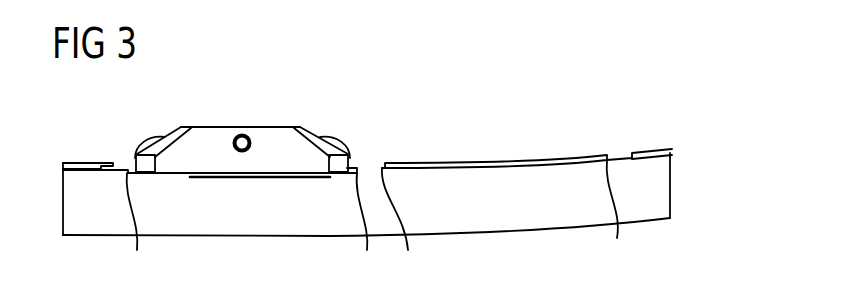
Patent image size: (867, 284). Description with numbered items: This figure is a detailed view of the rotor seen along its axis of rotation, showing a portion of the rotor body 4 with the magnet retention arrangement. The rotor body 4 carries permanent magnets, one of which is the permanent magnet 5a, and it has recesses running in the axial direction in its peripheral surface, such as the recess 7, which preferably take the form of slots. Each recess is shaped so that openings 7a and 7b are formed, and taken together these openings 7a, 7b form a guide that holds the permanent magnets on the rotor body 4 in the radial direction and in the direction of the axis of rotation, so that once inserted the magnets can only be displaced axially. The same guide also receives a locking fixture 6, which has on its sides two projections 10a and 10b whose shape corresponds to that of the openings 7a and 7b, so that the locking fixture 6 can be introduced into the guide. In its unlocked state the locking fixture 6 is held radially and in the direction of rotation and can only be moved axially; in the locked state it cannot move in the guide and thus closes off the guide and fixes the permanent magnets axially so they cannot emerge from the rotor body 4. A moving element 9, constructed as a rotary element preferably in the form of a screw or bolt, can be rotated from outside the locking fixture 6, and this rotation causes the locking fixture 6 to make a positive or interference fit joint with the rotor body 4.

The rotor body 4 is at (667, 190).
The permanent magnet 5a is at (336, 141).
The locking fixture 6 is at (270, 110).
The recess 7 is at (508, 161).
The opening 7a is at (402, 226).
The opening 7b is at (616, 218).
The moving element 9 is at (242, 134).
The projection 10a is at (136, 228).
The projection 10b is at (365, 228).